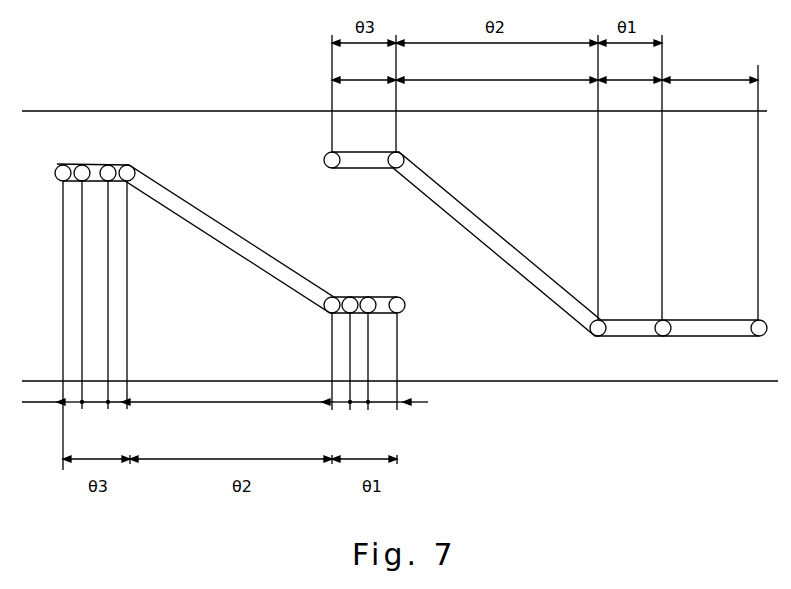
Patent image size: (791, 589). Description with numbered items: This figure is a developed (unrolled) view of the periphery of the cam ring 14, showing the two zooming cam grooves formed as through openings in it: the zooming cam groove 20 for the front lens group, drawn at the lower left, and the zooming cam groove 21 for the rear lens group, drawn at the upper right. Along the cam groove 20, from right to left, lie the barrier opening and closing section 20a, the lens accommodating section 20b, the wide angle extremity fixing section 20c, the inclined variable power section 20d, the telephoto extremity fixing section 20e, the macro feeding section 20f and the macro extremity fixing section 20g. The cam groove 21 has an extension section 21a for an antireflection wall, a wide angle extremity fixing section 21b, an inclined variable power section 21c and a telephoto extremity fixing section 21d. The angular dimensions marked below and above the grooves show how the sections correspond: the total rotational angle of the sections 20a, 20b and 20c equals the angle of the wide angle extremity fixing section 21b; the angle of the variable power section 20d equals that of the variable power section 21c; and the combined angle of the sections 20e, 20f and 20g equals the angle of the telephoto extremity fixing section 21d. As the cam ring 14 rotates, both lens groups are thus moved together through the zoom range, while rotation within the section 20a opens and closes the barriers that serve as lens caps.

The cam ring 14 is at (96, 131).
The zooming cam groove for the front lens group 20 is at (209, 216).
The opening and closing section 20a is at (425, 372).
The lens accommodating section 20b is at (362, 405).
The wide angle extremity fixing section 20c is at (336, 404).
The variable power section 20d is at (227, 306).
The telephoto extremity fixing section 20e is at (120, 404).
The macro feeding section 20f is at (92, 404).
The macro extremity fixing section 20g is at (43, 325).
The zooming cam groove for the rear lens group 21 is at (521, 277).
The extension section for an antireflection wall 21a is at (710, 187).
The wide angle extremity fixing section 21b is at (630, 177).
The variable power section 21c is at (497, 177).
The telephoto extremity fixing section 21d is at (364, 93).